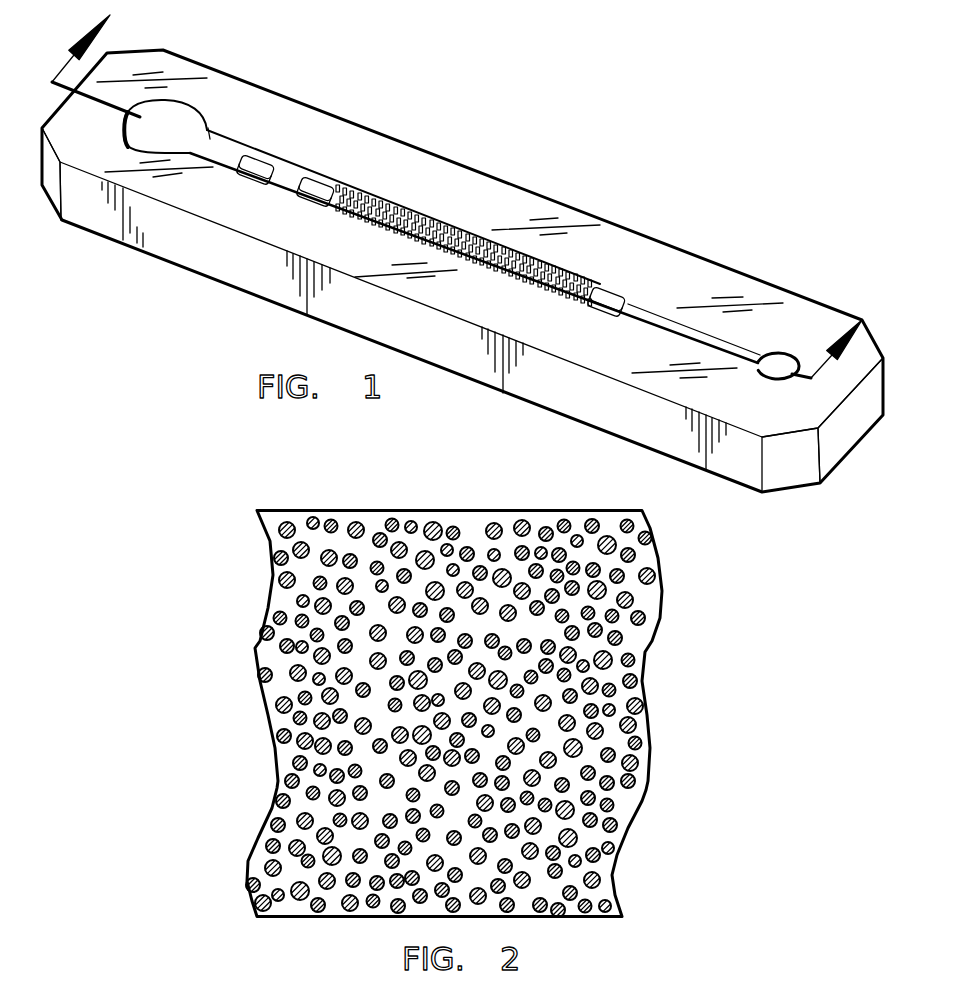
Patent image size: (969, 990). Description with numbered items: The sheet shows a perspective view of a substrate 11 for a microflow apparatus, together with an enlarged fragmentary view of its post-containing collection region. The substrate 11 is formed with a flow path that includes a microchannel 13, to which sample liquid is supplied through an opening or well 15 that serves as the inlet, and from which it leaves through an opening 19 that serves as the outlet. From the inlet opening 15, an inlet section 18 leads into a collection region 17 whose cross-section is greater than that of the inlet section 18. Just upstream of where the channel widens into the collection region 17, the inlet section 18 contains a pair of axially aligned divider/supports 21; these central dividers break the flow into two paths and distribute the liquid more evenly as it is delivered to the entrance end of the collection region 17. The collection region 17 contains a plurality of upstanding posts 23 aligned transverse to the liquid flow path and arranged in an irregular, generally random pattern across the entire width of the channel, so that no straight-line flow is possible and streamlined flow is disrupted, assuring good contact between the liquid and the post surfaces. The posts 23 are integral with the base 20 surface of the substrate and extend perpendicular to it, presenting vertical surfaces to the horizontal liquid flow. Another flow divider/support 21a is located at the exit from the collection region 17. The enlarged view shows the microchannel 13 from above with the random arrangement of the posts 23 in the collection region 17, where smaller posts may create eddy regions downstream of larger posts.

In FIG. 1, the substrate 11 is at (307, 67).
In FIG. 1, the microchannel 13 is at (620, 273).
In FIG. 1, the opening or well 15 is at (170, 118).
In FIG. 1, the collection region 17 is at (443, 213).
In FIG. 1, the inlet section 18 is at (222, 147).
In FIG. 1, the opening 19 is at (785, 370).
In FIG. 2, the base surface 20 is at (475, 527).
In FIG. 1, the divider/supports 21 is at (253, 160).
In FIG. 1, the flow divider/support 21a is at (602, 307).
In FIG. 1, the upstanding posts 23 is at (397, 197).
In FIG. 2, the upstanding posts 23 is at (392, 525).